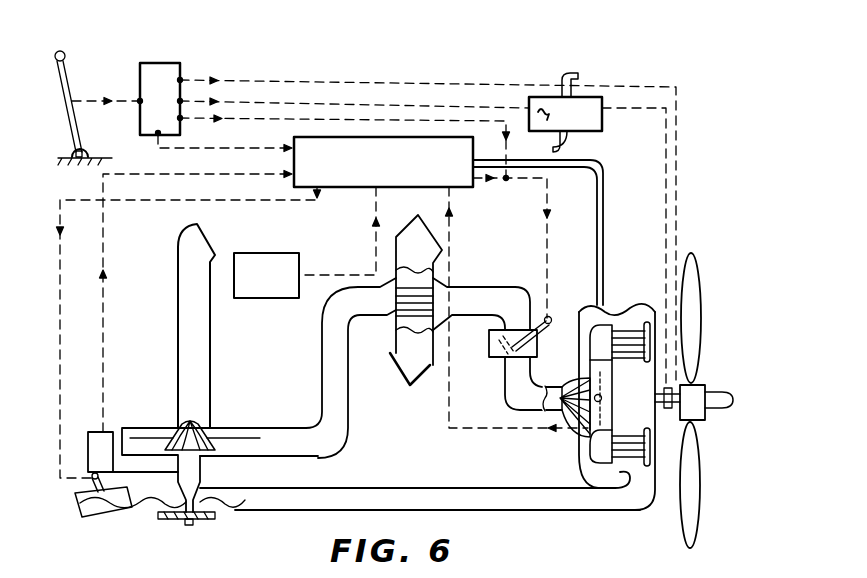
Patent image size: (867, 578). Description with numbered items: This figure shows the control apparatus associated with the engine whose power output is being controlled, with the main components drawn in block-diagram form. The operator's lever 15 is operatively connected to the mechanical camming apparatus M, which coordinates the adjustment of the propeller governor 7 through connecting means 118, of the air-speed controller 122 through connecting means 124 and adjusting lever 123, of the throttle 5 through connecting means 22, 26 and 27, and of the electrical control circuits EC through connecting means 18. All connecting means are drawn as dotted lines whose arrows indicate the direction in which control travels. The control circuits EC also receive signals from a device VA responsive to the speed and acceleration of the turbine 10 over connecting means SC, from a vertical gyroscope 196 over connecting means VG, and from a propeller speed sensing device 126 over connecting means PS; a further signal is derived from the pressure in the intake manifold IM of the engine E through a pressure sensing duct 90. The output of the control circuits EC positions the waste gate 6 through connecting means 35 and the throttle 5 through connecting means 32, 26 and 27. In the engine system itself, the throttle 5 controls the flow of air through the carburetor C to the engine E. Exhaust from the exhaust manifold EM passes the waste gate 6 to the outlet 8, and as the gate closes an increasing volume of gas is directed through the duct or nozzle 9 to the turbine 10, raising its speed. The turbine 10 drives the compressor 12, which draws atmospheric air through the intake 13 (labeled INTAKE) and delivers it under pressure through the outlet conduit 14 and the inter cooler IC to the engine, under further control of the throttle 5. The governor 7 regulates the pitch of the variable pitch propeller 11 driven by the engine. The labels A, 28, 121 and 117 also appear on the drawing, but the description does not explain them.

The lever 15 is at (69, 64).
The lever position signal A is at (90, 101).
The mechanical camming apparatus M is at (160, 99).
The connecting means 118 is at (280, 81).
The connecting means 124 is at (288, 104).
The connecting means 22 is at (284, 119).
The connecting means 18 is at (212, 148).
The connecting means 35 is at (146, 200).
The connecting means SC is at (104, 310).
The electrical control circuits EC is at (383, 162).
The connecting means 32 is at (478, 187).
The connecting means 26 is at (549, 250).
The connecting means VG is at (379, 190).
The connecting means PS is at (490, 428).
The turbine 28 is at (503, 415).
The adjusting lever 123 is at (565, 112).
The air-speed controller 122 is at (588, 92).
The control line 121 is at (666, 148).
The pressure sensing duct 90 is at (603, 222).
The intake 13 is at (208, 345).
The air intake INTAKE is at (207, 237).
The vertical gyroscope 196 is at (260, 298).
The inter cooler IC is at (430, 240).
The throttle 5 is at (496, 346).
The connecting means 27 is at (544, 330).
The carburetor C is at (487, 340).
The intake manifold IM is at (610, 303).
The exhaust manifold EM is at (622, 512).
The engine E is at (620, 394).
The propeller speed sensing device 126 is at (602, 396).
The propeller governor 7 is at (686, 386).
The propeller shaft coupling 117 is at (672, 420).
The variable pitch propeller 11 is at (694, 290).
The turbine speed and acceleration responsive device VA is at (103, 432).
The outlet conduit 14 is at (290, 430).
The compressor 12 is at (200, 424).
The turbine 10 is at (205, 520).
The duct or nozzle 9 is at (226, 508).
The waste gate 6 is at (112, 506).
The outlet 8 is at (82, 495).